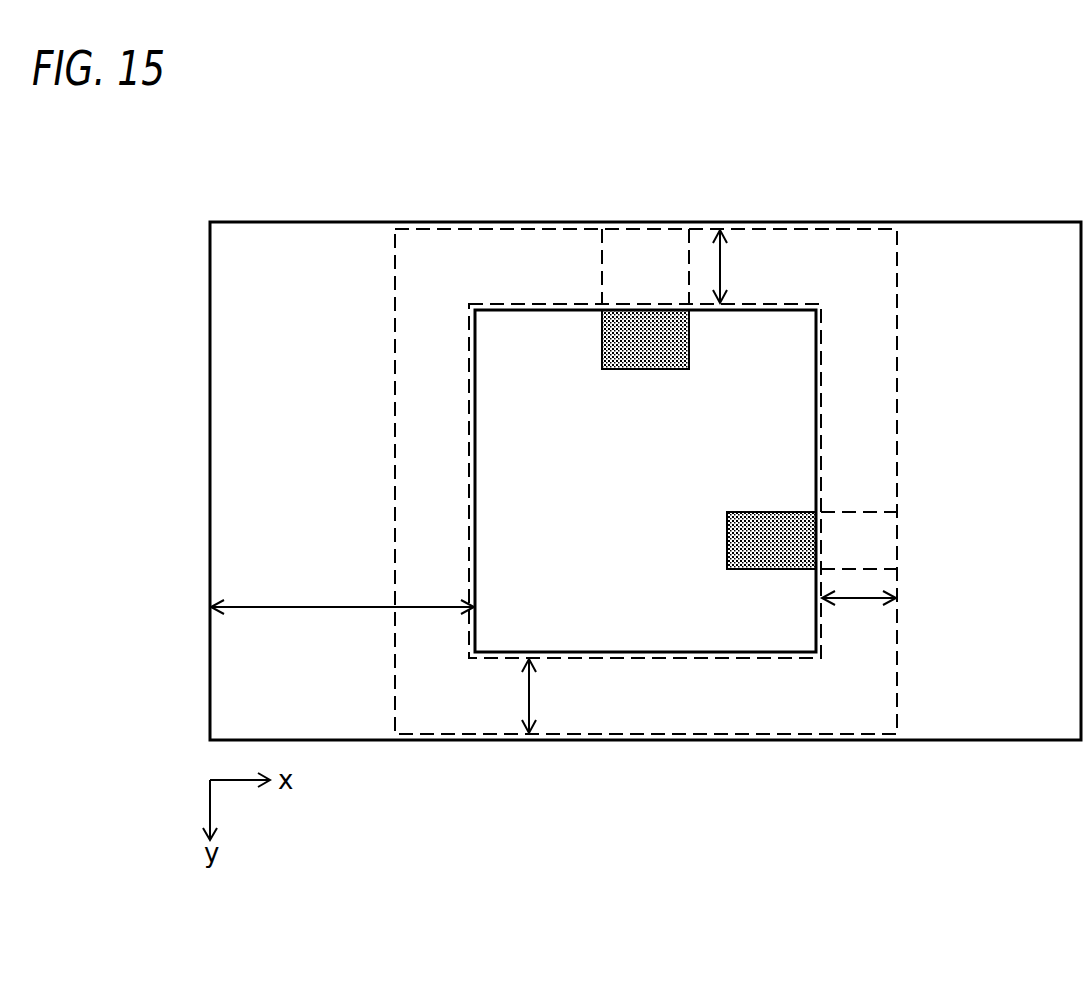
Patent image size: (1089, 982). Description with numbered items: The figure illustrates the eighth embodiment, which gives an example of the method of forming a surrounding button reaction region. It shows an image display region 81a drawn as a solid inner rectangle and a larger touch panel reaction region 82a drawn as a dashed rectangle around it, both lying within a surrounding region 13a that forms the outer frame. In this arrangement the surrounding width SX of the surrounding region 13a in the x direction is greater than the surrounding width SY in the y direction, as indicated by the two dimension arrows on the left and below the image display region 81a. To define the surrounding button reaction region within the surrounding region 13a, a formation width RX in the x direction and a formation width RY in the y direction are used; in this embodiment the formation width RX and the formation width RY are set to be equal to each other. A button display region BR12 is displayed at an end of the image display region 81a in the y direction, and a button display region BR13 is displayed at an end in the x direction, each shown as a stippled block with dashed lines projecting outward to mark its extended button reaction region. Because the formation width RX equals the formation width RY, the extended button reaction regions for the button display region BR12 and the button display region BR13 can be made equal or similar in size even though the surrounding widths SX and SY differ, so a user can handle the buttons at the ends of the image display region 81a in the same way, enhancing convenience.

The surrounding region 13a is at (987, 267).
The touch panel reaction region 82a is at (359, 222).
The image display region 81a is at (520, 305).
The button display region BR12 is at (648, 340).
The button display region BR13 is at (773, 569).
The formation width RY is at (722, 265).
The formation width RX is at (857, 599).
The surrounding width SX is at (344, 608).
The surrounding width SY is at (530, 695).